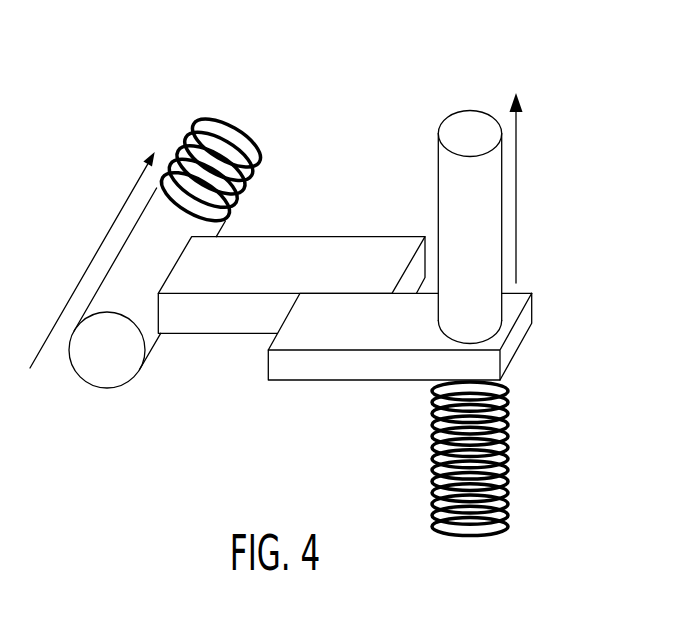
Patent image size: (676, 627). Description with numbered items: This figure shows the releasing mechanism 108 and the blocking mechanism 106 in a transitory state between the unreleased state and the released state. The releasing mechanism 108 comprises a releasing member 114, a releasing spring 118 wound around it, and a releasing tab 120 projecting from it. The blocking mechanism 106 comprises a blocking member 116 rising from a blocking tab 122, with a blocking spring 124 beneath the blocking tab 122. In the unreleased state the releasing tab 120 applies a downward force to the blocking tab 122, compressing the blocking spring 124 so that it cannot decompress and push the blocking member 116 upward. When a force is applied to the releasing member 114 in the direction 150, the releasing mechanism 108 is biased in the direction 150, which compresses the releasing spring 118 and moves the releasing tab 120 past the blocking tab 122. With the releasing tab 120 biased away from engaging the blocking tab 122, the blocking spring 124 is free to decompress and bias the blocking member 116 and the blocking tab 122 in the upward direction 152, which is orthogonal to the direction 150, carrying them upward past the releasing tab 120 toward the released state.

The blocking mechanism 106 is at (374, 398).
The releasing mechanism 108 is at (187, 113).
The releasing member 114 is at (105, 388).
The blocking member 116 is at (468, 111).
The releasing spring 118 is at (237, 120).
The releasing tab 120 is at (308, 232).
The blocking tab 122 is at (300, 368).
The blocking spring 124 is at (473, 503).
The direction 150 is at (100, 247).
The upward direction 152 is at (518, 203).